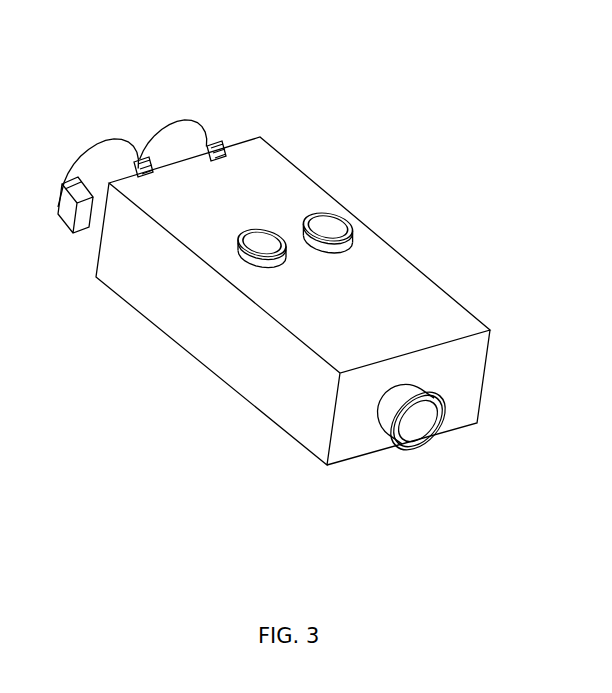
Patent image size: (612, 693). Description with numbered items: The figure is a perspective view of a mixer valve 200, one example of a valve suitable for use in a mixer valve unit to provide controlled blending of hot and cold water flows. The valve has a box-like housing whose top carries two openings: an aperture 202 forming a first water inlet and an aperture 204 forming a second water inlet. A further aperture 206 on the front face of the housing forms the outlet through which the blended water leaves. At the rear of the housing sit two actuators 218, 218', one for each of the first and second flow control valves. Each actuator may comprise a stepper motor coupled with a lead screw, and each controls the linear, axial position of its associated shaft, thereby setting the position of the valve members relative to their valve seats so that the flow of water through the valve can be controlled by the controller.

The mixer valve 200 is at (358, 65).
The aperture 202 is at (250, 253).
The aperture 204 is at (345, 218).
The aperture 206 is at (413, 447).
The actuator 218 is at (98, 139).
The actuator 218' is at (205, 115).